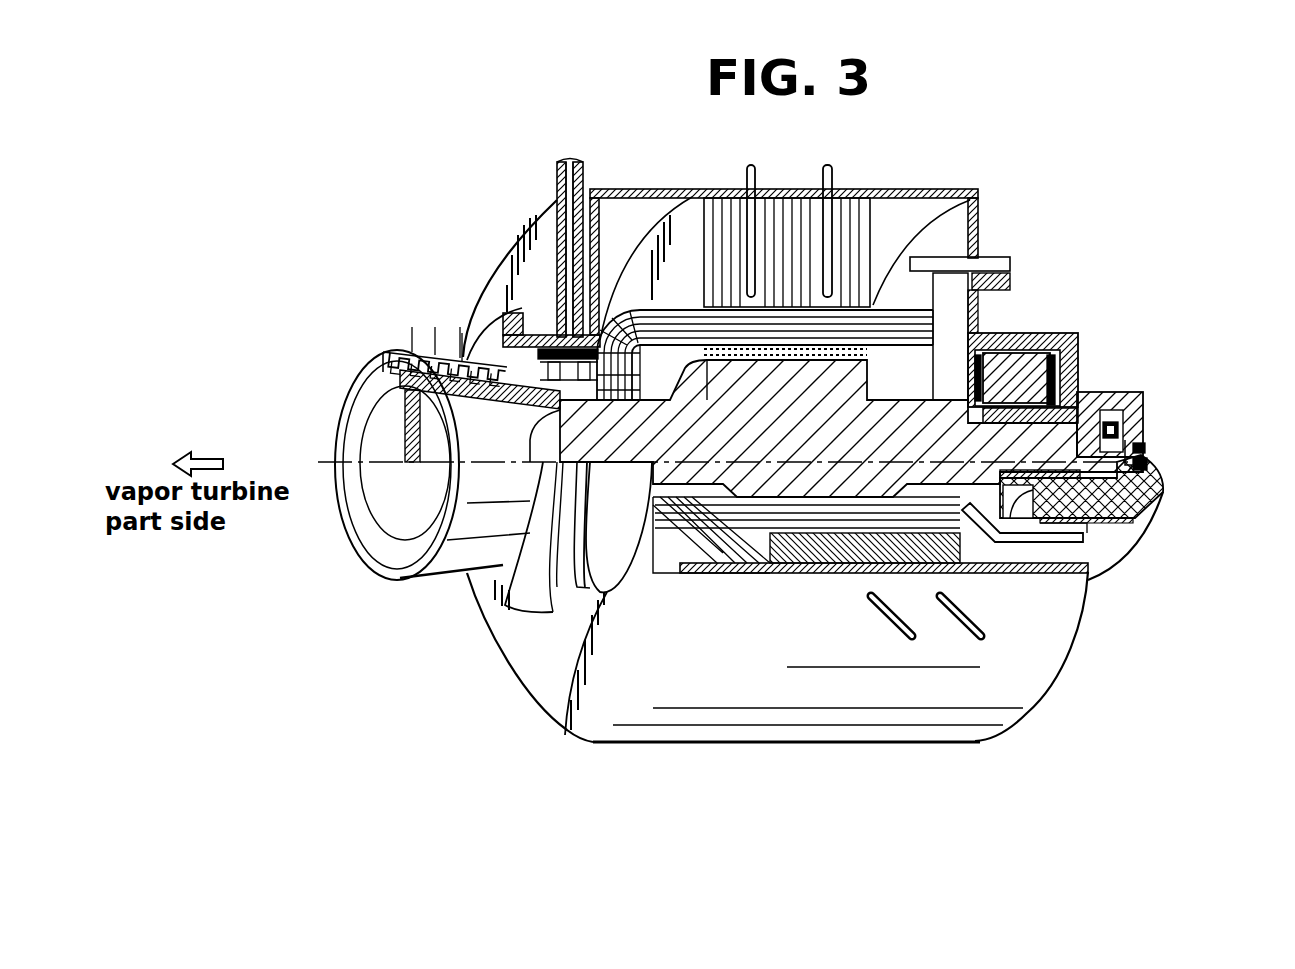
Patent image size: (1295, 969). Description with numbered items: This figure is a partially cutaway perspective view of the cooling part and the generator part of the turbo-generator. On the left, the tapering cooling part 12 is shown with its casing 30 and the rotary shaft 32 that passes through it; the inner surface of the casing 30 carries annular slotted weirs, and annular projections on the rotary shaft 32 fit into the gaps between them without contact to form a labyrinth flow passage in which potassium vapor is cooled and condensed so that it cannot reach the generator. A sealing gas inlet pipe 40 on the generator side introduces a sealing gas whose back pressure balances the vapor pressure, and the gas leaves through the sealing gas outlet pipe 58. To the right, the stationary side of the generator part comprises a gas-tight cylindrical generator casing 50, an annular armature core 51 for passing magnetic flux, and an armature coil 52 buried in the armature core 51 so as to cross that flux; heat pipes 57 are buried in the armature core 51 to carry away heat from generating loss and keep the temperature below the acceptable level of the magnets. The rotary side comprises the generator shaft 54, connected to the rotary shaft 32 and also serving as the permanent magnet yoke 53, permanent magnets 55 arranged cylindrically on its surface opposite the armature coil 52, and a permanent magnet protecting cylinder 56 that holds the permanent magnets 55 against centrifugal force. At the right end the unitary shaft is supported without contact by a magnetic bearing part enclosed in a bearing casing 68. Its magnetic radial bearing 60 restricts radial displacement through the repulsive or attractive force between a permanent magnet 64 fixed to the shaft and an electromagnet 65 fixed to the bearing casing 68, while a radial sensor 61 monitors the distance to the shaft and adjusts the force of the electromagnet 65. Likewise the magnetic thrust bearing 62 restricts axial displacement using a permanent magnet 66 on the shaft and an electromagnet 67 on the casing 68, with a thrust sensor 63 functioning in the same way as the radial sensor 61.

The tapering cooling part 12 is at (448, 338).
The casing 30 is at (388, 348).
The rotary shaft 32 is at (360, 374).
The sealing gas inlet pipe 40 is at (556, 182).
The generator casing 50 is at (972, 188).
The annular armature core 51 is at (733, 213).
The armature coil 52 is at (730, 327).
The permanent magnet yoke 53 is at (975, 570).
The generator shaft 54 is at (1100, 532).
The permanent magnets 55 is at (825, 498).
The permanent magnet protecting cylinder 56 is at (760, 503).
The heat pipes 57 is at (833, 176).
The sealing gas outlet pipe 58 is at (1007, 291).
The magnetic radial bearing 60 is at (1143, 298).
The radial sensor 61 is at (1078, 393).
The magnetic thrust bearing 62 is at (1230, 437).
The thrust sensor 63 is at (1113, 413).
The permanent magnet 64 is at (1073, 370).
The electromagnet 65 is at (1073, 337).
The permanent magnet 66 is at (1147, 455).
The electromagnet 67 is at (1143, 435).
The bearing casing 68 is at (1037, 337).